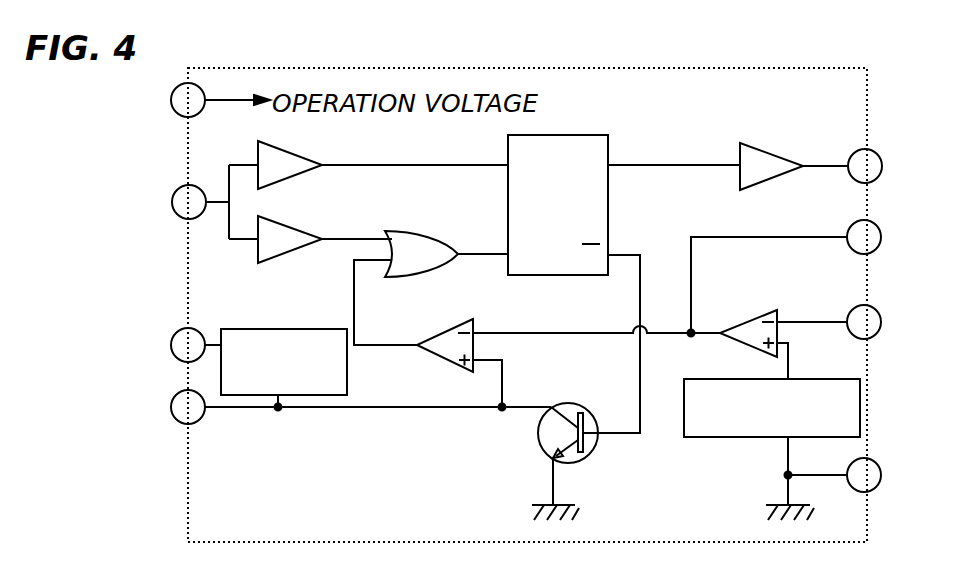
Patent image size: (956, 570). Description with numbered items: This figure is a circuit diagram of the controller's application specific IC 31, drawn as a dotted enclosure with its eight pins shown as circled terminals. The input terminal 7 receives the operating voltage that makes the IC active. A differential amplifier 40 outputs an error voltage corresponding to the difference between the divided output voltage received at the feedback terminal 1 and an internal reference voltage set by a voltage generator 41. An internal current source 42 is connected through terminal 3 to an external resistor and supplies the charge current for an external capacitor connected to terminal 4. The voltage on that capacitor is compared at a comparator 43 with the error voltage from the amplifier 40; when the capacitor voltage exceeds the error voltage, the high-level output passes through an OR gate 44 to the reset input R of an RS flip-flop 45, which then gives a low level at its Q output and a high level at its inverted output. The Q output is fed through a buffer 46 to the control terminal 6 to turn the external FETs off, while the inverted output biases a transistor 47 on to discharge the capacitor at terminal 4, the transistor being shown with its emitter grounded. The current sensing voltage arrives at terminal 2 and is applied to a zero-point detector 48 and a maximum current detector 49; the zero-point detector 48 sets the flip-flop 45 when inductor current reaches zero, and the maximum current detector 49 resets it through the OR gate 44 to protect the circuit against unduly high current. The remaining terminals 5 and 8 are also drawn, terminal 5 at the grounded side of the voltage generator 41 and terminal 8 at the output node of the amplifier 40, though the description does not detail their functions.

The application specific IC 31 is at (855, 67).
The differential amplifier 40 is at (747, 317).
The voltage generator 41 is at (708, 437).
The internal current source 42 is at (270, 325).
The comparator 43 is at (437, 360).
The OR gate 44 is at (418, 277).
The RS flip-flop 45 is at (612, 147).
The buffer 46 is at (770, 148).
The transistor 47 is at (535, 445).
The zero-point detector 48 is at (302, 177).
The maximum current detector 49 is at (292, 258).
The feedback terminal (pin no. 1) 1 is at (864, 322).
The current sensing terminal (pin no. 2) 2 is at (189, 202).
The current source terminal (pin no. 3) 3 is at (188, 345).
The capacitor terminal (pin no. 4) 4 is at (188, 407).
The terminal 5 is at (864, 475).
The control terminal (pin no. 6) 6 is at (865, 166).
The input terminal (pin no. 7) 7 is at (188, 100).
The terminal 8 is at (864, 237).